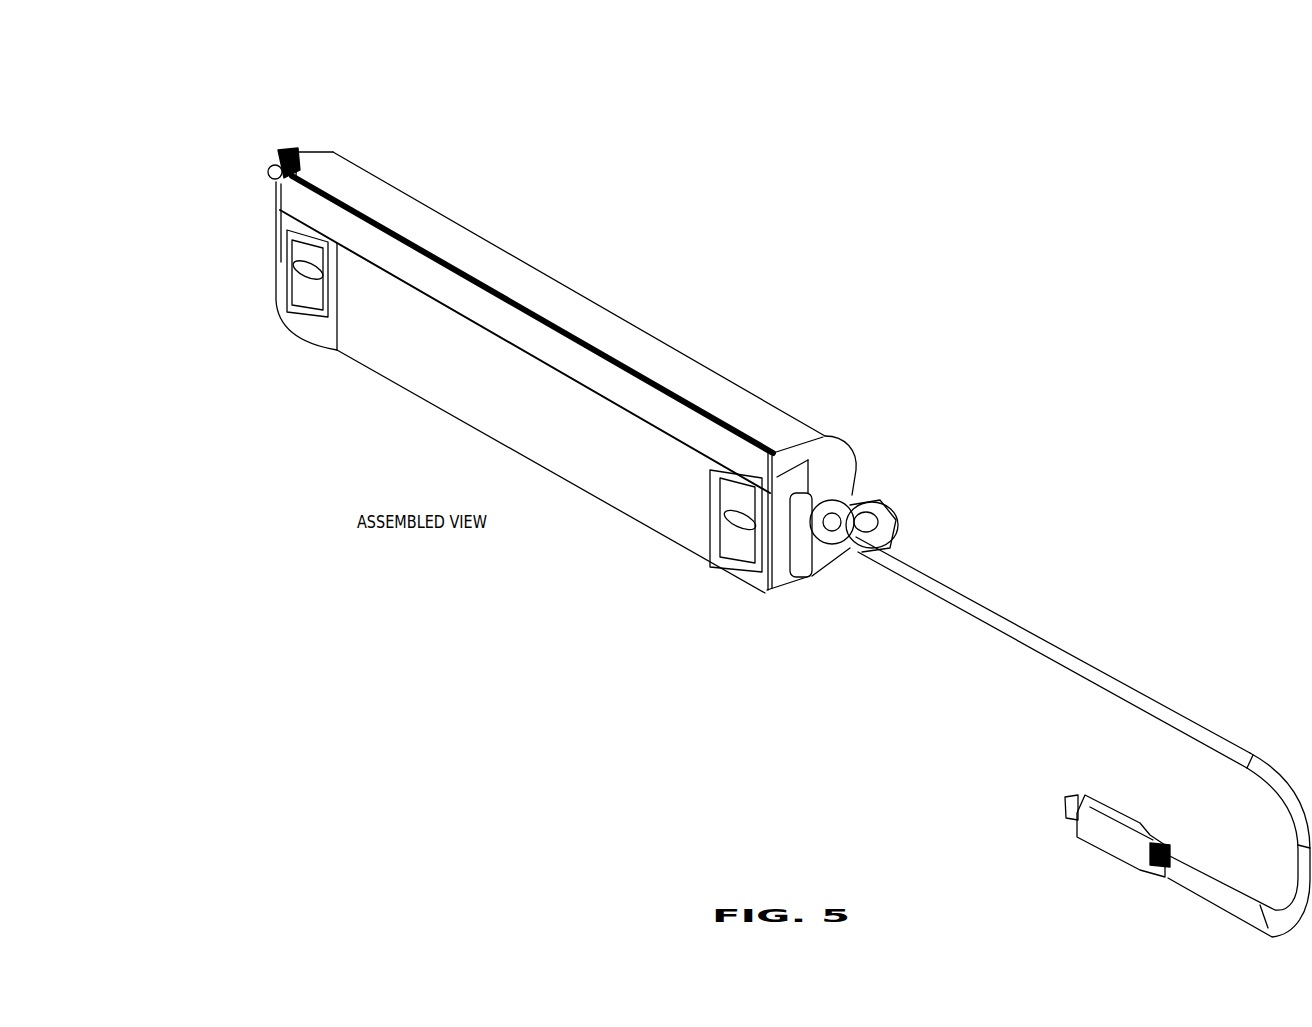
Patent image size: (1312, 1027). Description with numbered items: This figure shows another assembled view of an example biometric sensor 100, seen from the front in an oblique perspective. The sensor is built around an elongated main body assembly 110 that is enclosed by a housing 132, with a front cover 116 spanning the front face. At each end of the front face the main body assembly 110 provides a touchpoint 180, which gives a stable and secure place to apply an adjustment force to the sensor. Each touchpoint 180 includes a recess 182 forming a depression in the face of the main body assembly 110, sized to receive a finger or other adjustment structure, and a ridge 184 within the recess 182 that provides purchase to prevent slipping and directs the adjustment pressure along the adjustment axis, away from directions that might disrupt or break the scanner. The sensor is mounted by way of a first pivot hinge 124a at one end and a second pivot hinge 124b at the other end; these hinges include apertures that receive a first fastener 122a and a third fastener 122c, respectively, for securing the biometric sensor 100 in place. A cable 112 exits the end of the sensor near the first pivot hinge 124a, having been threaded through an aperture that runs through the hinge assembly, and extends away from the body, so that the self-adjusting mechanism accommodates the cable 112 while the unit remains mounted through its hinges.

The biometric sensor 100 is at (1111, 312).
The main body assembly 110 is at (722, 170).
The cable 112 is at (1208, 568).
The front cover 116 is at (650, 273).
The first fastener 122a is at (1087, 444).
The third fastener 122c is at (508, 108).
The first pivot hinge 124a is at (1090, 409).
The second pivot hinge 124b is at (425, 68).
The housing 132 is at (945, 366).
The touchpoint 180 is at (193, 455).
The recess 182 is at (192, 400).
The ridge 184 is at (190, 335).